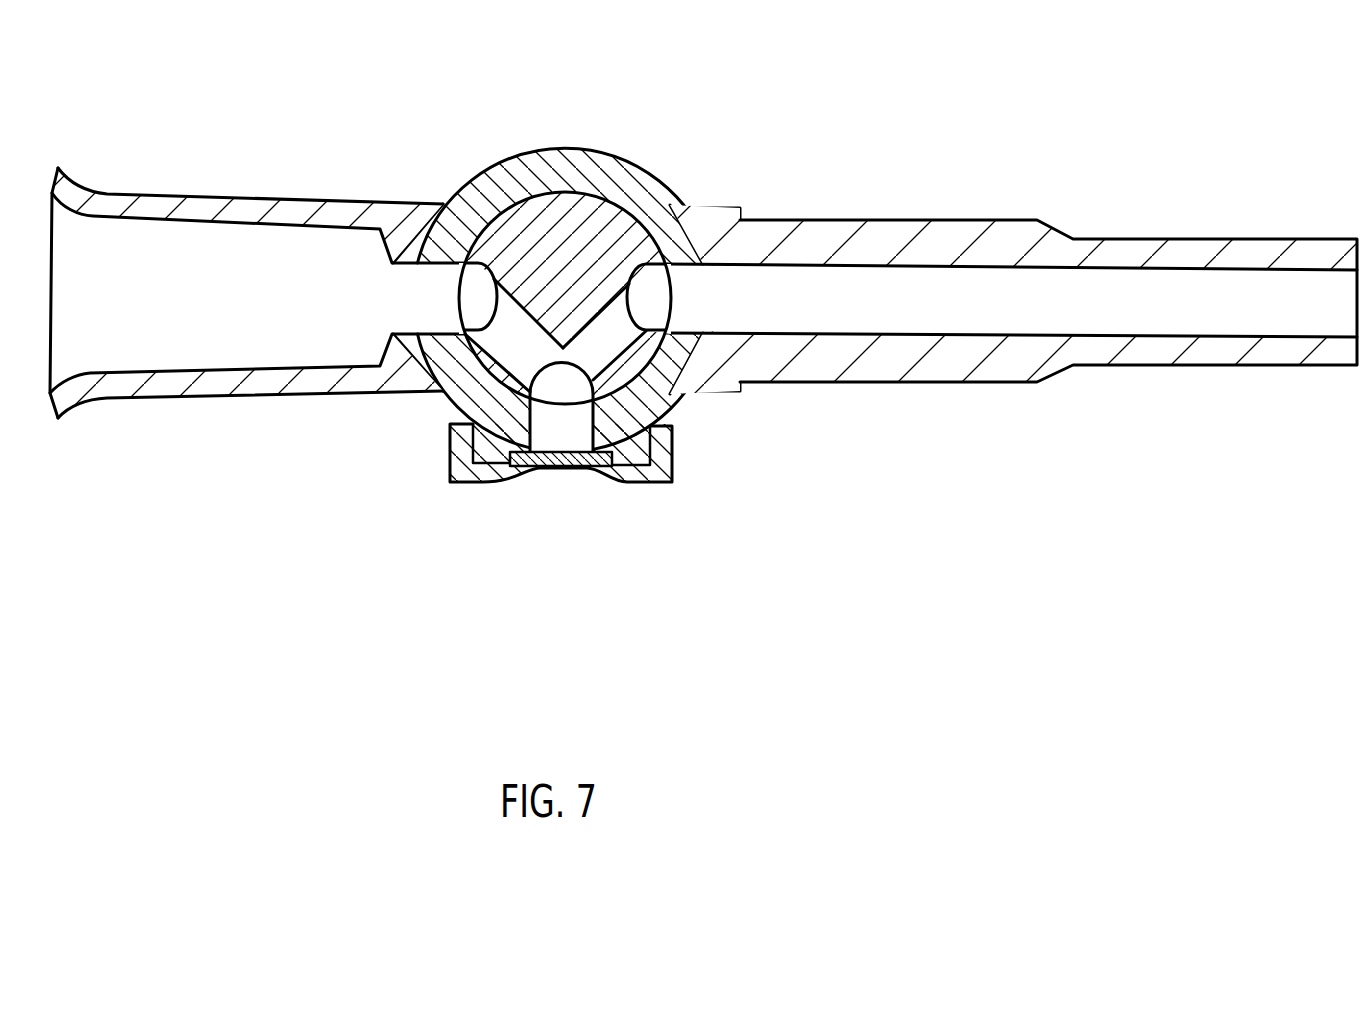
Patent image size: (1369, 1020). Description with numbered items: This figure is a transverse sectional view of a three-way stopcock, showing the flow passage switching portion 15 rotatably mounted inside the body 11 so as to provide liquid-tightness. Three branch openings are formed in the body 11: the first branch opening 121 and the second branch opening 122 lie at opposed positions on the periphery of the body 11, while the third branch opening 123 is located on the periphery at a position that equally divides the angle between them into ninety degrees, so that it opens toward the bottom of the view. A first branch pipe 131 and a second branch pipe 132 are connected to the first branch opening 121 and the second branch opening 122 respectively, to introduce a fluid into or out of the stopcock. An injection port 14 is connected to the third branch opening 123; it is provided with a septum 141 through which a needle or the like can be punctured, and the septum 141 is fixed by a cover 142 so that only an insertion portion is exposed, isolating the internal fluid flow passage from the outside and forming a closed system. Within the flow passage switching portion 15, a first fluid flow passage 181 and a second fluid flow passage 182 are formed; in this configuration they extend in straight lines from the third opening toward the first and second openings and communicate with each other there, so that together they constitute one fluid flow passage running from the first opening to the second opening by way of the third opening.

The body 11 is at (482, 180).
The flow passage switching portion 15 is at (627, 232).
The first branch opening 121 is at (440, 297).
The second branch opening 122 is at (687, 298).
The third branch opening 123 is at (570, 427).
The first branch pipe 131 is at (242, 383).
The second branch pipe 132 is at (1228, 353).
The injection port 14 is at (552, 539).
The septum 141 is at (561, 523).
The cover 142 is at (467, 483).
The first fluid flow passage 181 is at (612, 313).
The second fluid flow passage 182 is at (512, 313).